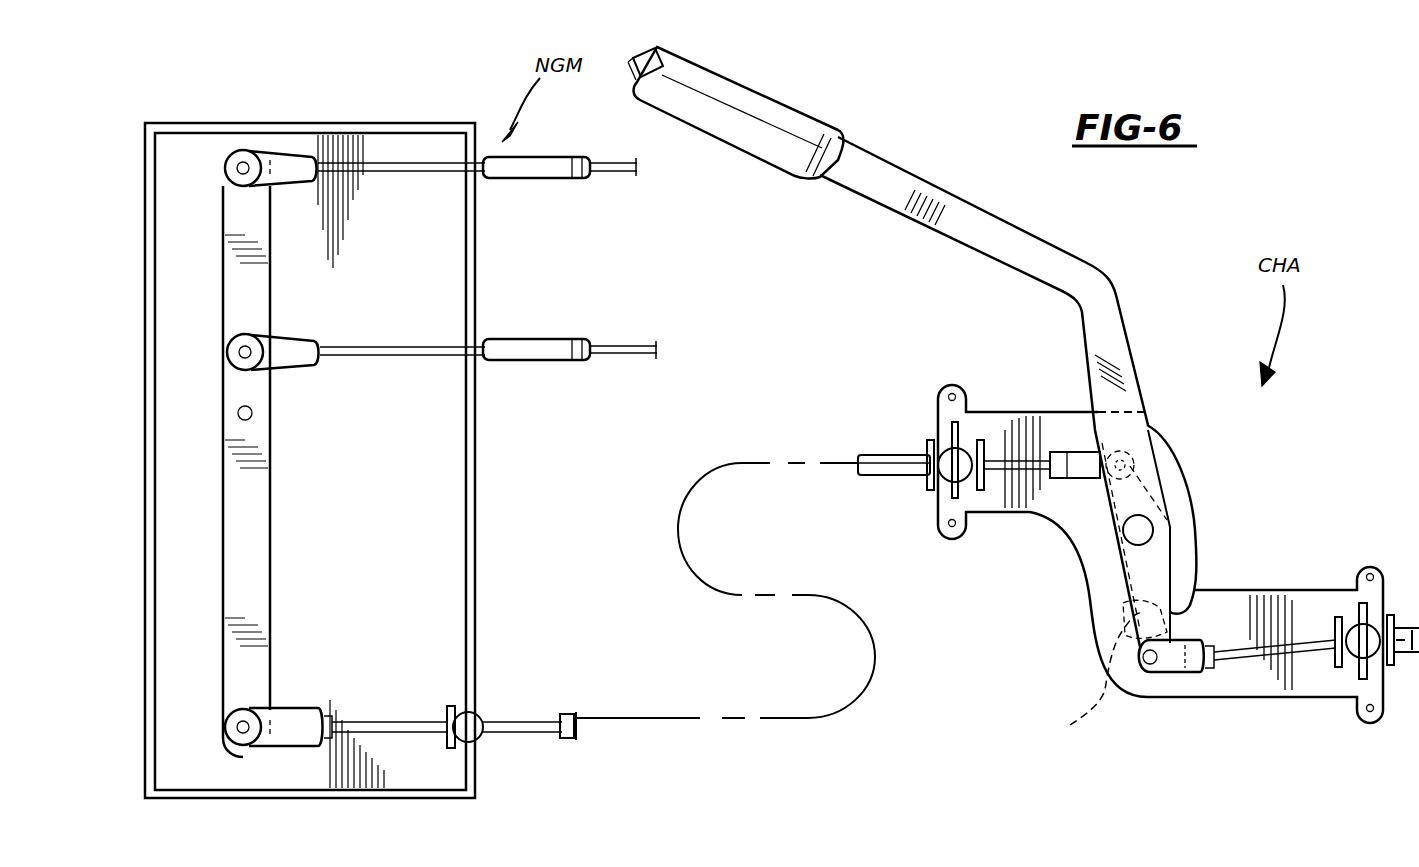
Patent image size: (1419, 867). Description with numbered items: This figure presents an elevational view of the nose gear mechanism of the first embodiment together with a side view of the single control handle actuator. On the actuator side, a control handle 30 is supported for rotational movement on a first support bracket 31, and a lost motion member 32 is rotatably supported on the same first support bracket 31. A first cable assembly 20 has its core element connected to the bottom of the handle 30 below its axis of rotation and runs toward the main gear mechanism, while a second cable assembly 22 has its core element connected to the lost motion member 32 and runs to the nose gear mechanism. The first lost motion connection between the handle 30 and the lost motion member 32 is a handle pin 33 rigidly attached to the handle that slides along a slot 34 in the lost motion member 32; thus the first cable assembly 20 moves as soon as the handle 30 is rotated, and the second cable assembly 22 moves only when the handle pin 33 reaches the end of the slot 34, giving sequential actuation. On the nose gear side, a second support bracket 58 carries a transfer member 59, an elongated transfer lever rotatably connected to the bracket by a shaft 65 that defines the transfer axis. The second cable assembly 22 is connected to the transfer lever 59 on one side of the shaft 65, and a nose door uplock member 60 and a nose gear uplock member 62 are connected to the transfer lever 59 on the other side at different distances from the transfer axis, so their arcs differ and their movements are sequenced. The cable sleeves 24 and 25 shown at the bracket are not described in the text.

The first cable assembly 20 is at (1410, 660).
The second cable assembly 22 is at (576, 742).
The cable sleeve 24 is at (570, 178).
The cable sleeve 25 is at (575, 360).
The control handle 30 is at (1005, 240).
The first support bracket 31 is at (1257, 605).
The lost motion member 32 is at (1178, 580).
The handle pin 33 is at (1085, 680).
The slot 34 is at (1193, 600).
The second support bracket 58 is at (480, 577).
The transfer member 59 is at (262, 597).
The nose door uplock member 60 is at (283, 165).
The nose gear uplock member 62 is at (300, 345).
The shaft 65 is at (255, 420).